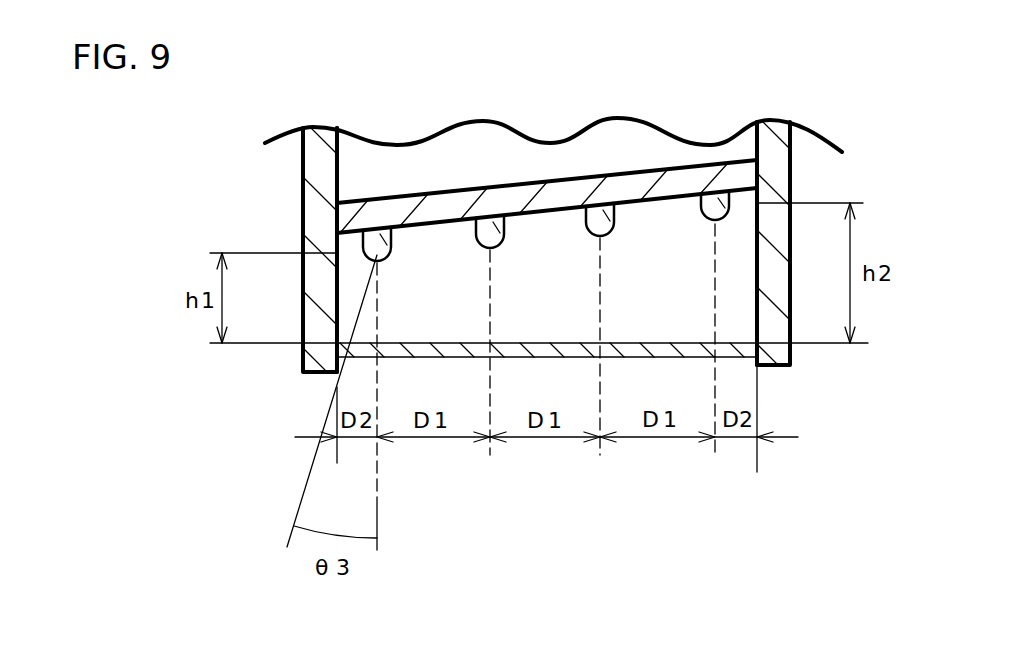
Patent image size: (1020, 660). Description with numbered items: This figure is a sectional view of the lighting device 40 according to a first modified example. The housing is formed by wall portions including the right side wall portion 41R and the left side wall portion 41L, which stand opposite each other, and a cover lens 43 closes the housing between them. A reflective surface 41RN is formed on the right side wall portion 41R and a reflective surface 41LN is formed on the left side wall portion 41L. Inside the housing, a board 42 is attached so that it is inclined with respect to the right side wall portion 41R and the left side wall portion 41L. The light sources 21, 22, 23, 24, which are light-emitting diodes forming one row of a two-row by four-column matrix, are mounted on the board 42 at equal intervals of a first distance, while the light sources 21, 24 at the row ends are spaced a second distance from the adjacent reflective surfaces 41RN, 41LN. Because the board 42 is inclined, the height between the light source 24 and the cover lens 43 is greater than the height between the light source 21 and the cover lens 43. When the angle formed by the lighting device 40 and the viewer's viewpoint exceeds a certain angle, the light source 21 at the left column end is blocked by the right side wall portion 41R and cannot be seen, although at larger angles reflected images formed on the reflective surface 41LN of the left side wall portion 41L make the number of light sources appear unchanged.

The lighting device 40 is at (479, 88).
The right side wall portion 41R is at (320, 172).
The left side wall portion 41L is at (778, 175).
The reflective surface of the right side wall portion 41RN is at (339, 315).
The reflective surface of the left side wall portion 41LN is at (755, 273).
The board 42 is at (518, 187).
The cover lens 43 is at (544, 358).
The light source 21 is at (392, 253).
The light source 22 is at (504, 236).
The light source 23 is at (587, 224).
The light source 24 is at (702, 208).